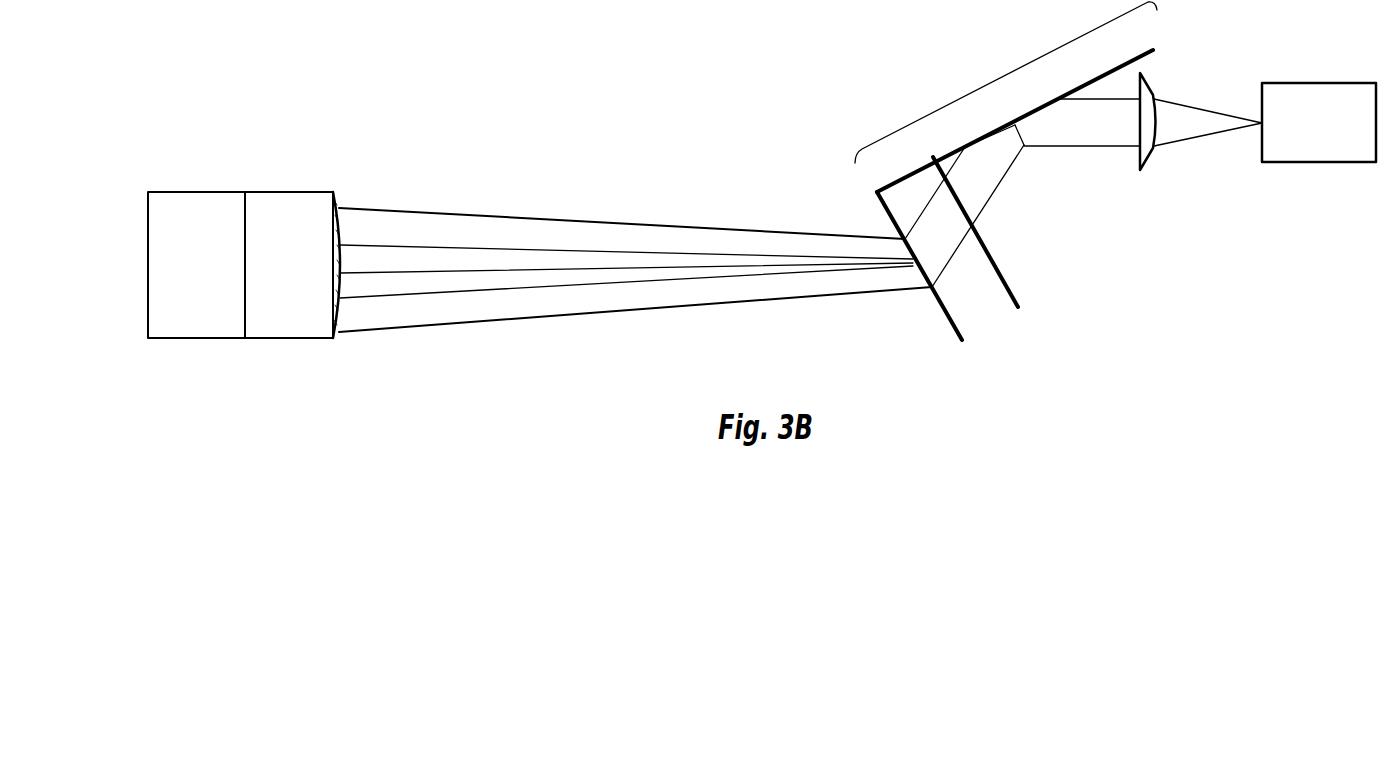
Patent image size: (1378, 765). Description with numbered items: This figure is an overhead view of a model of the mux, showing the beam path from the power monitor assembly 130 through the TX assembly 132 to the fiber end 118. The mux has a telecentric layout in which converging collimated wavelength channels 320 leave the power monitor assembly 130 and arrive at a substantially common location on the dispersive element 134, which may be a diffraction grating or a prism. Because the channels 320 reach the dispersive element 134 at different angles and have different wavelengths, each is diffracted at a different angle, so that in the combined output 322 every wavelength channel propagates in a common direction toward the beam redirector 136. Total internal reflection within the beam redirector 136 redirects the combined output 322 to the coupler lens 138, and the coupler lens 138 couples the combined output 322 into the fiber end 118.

The fiber end 118 is at (1302, 83).
The power monitor assembly 130 is at (294, 192).
The TX assembly 132 is at (1010, 72).
The dispersive element 134 is at (943, 312).
The beam redirector 136 is at (892, 184).
The coupler lens 138 is at (1152, 92).
The converging collimated wavelength channels 320 is at (643, 312).
The combined output 322 is at (947, 267).